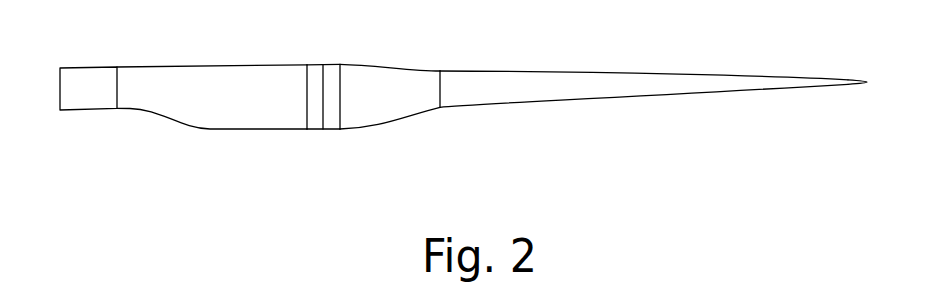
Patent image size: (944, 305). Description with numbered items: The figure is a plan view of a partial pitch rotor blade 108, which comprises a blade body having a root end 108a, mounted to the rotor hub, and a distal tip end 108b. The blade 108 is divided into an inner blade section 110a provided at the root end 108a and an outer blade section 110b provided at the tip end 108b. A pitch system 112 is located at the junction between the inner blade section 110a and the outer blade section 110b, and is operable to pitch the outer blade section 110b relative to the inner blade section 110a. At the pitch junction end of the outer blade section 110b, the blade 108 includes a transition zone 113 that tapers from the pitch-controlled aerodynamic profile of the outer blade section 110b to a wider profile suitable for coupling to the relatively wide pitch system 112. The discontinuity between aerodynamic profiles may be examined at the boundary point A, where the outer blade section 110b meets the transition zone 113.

The rotor blade 108 is at (230, 173).
The root end 108a is at (93, 98).
The distal tip end 108b is at (828, 82).
The inner blade section 110a is at (310, 52).
The outer blade section 110b is at (840, 50).
The pitch system 112 is at (307, 130).
The transition zone 113 is at (385, 108).
The boundary point A is at (444, 124).